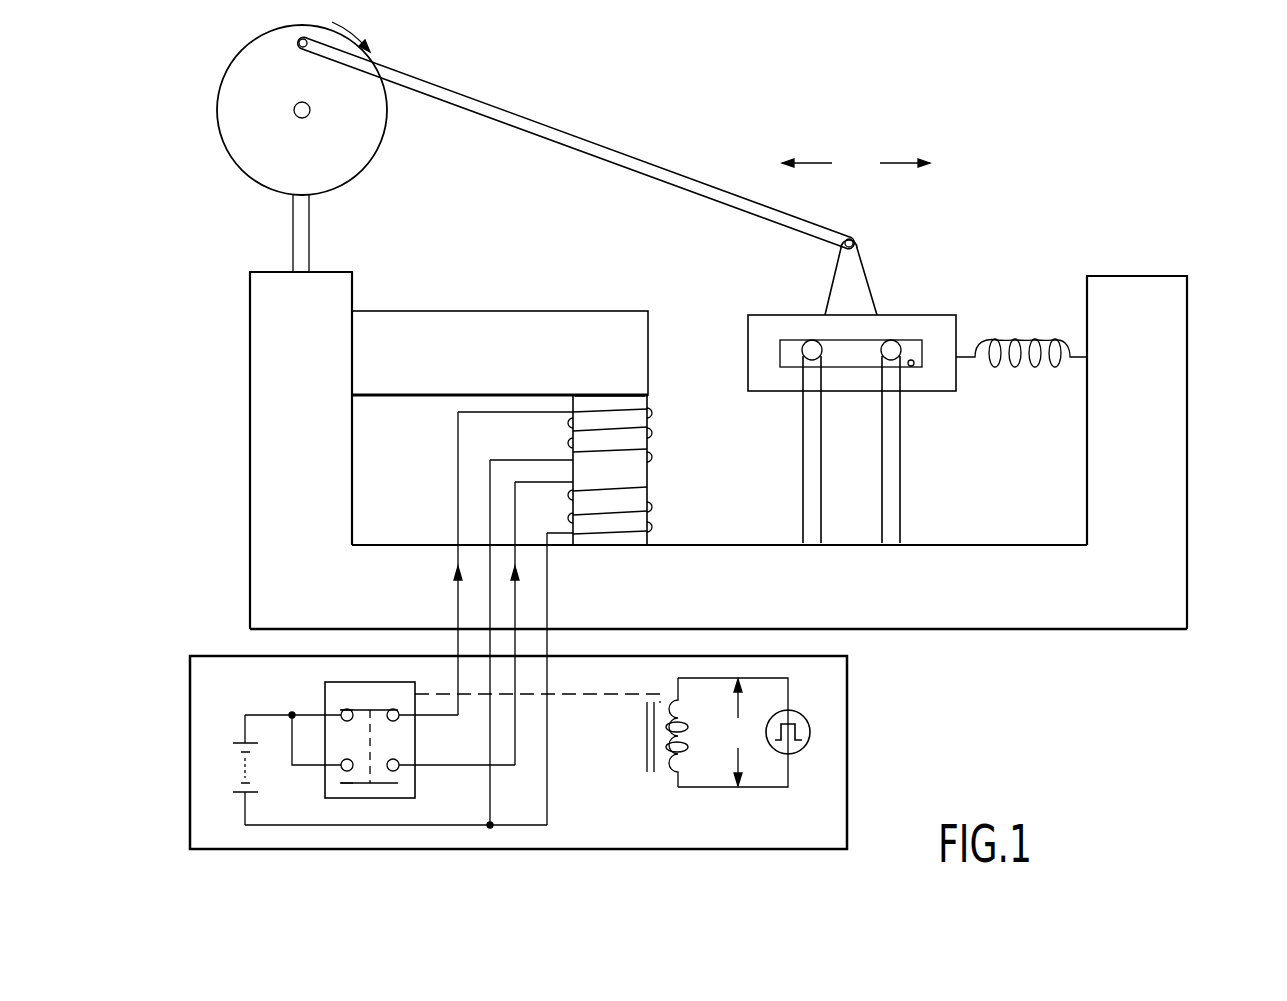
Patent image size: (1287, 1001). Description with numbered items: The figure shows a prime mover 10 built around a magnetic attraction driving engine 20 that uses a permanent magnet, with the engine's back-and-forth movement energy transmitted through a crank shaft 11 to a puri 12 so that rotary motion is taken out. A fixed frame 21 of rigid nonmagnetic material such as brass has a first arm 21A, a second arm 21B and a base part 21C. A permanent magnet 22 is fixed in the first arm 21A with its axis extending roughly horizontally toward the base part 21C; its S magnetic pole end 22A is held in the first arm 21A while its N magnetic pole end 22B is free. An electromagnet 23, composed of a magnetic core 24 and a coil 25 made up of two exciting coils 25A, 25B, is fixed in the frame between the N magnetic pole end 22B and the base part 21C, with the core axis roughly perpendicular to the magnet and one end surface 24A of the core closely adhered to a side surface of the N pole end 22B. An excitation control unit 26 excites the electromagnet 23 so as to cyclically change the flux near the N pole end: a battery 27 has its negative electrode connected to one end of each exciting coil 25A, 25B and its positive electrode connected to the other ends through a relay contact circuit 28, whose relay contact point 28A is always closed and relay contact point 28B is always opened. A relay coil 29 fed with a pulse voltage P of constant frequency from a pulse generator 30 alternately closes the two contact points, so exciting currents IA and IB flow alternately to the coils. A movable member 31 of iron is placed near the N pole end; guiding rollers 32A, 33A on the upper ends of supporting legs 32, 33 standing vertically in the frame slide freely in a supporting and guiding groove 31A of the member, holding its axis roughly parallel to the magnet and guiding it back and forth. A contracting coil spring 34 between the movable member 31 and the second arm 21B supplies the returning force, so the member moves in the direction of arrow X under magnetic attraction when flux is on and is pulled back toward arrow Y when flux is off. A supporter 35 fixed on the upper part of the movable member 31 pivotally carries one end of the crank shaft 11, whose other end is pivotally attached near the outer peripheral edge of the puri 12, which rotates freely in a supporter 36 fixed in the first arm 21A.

The prime mover 10 is at (790, 117).
The crank shaft 11 is at (537, 130).
The puri 12 is at (235, 110).
The magnetic attraction driving engine 20 is at (997, 242).
The fixed frame 21 is at (1013, 627).
The first arm 21A is at (265, 380).
The second arm 21B is at (1187, 482).
The base part 21C is at (918, 607).
The permanent magnet 22 is at (472, 311).
The S magnetic pole end 22A is at (375, 330).
The N magnetic pole end 22B is at (652, 350).
The electromagnet 23 is at (657, 522).
The magnetic core 24 is at (648, 405).
The end surface of the magnetic core 24A is at (600, 394).
The coil 25 is at (728, 432).
The first exciting coil 25A is at (652, 433).
The second exciting coil 25B is at (652, 487).
The excitation control unit 26 is at (847, 780).
The battery 27 is at (245, 765).
The relay contact circuit 28 is at (415, 778).
The relay contact point 28A is at (350, 710).
The relay contact point 28B is at (353, 790).
The relay coil 29 is at (665, 773).
The pulse generator 30 is at (808, 752).
The movable member 31 is at (882, 313).
The supporting and guiding groove 31A is at (911, 366).
The supporting leg 32 is at (823, 472).
The guiding roller 32A is at (810, 345).
The supporting leg 33 is at (901, 498).
The guiding roller 33A is at (892, 345).
The contracting coil spring 34 is at (1018, 367).
The supporter 35 is at (857, 272).
The supporter 36 is at (293, 232).